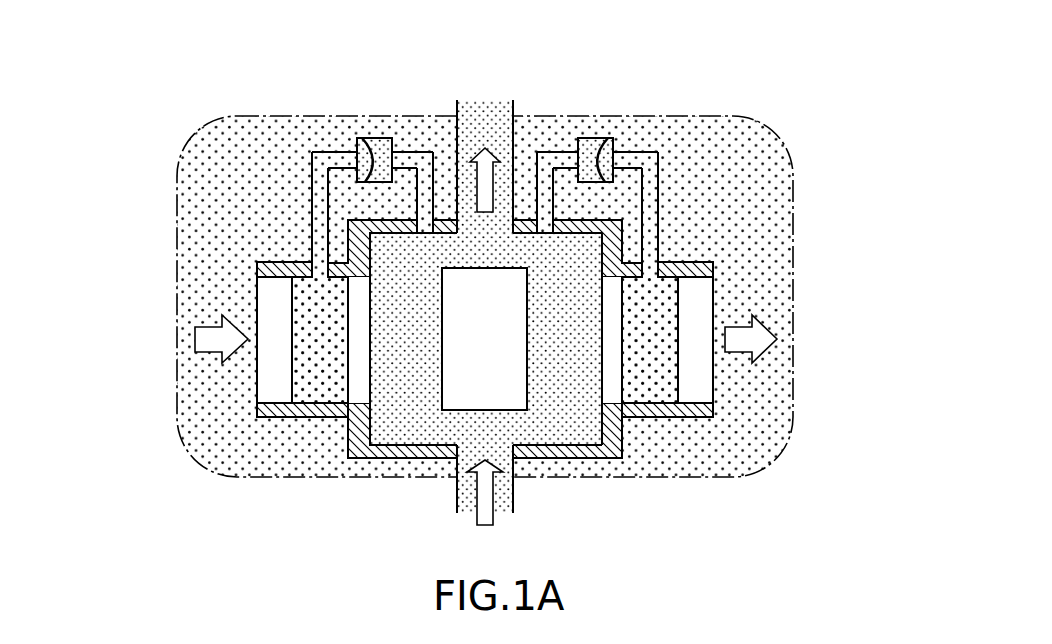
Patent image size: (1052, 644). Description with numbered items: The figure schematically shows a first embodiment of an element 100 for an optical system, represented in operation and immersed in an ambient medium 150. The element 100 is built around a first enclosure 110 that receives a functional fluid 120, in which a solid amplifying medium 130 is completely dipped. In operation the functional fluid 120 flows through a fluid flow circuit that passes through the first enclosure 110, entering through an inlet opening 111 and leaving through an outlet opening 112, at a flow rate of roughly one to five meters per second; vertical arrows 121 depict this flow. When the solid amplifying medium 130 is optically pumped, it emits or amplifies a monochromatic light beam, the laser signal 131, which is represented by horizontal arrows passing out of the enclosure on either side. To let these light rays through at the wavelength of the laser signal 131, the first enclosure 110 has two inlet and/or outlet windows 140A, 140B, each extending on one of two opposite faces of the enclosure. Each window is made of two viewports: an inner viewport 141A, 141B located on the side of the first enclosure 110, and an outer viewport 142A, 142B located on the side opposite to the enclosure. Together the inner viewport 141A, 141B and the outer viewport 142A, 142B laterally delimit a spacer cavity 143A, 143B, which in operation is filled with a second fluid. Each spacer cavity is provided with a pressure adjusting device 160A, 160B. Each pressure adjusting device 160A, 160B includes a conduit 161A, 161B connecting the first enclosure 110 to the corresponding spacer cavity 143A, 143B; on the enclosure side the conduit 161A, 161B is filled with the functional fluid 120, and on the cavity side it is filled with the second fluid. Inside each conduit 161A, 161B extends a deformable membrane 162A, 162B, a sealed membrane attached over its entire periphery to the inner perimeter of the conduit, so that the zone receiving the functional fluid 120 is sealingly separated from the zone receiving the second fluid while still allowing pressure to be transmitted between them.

The element 100 is at (485, 290).
The first enclosure 110 is at (381, 458).
The inlet opening 111 is at (500, 447).
The outlet opening 112 is at (497, 230).
The functional fluid 120 is at (568, 432).
The vertical arrows 121 is at (481, 291).
The solid amplifying medium 130 is at (463, 400).
The laser signal 131 is at (195, 337).
The inlet and/or outlet window 140A is at (196, 401).
The inner viewport 141A is at (355, 386).
The outer viewport 142A is at (265, 387).
The spacer cavity 143A is at (318, 387).
The inlet and/or outlet window 140B is at (773, 401).
The inner viewport 141B is at (612, 386).
The outer viewport 142B is at (703, 387).
The spacer cavity 143B is at (650, 387).
The ambient medium 150 is at (178, 209).
The pressure adjusting device 160A is at (358, 151).
The conduit 161A is at (336, 151).
The deformable membrane 162A is at (360, 138).
The pressure adjusting device 160B is at (613, 151).
The conduit 161B is at (553, 151).
The deformable membrane 162B is at (612, 152).